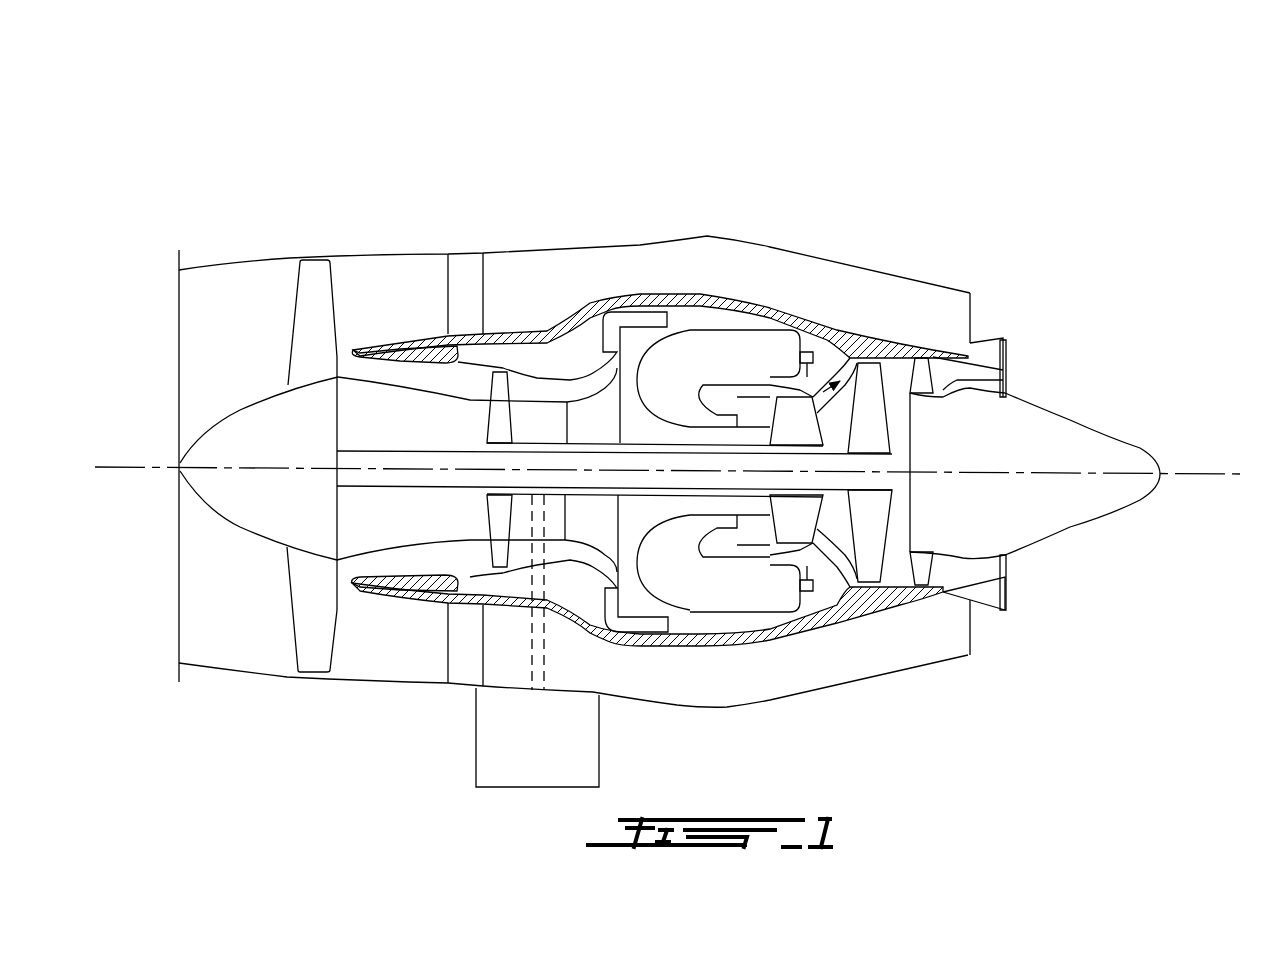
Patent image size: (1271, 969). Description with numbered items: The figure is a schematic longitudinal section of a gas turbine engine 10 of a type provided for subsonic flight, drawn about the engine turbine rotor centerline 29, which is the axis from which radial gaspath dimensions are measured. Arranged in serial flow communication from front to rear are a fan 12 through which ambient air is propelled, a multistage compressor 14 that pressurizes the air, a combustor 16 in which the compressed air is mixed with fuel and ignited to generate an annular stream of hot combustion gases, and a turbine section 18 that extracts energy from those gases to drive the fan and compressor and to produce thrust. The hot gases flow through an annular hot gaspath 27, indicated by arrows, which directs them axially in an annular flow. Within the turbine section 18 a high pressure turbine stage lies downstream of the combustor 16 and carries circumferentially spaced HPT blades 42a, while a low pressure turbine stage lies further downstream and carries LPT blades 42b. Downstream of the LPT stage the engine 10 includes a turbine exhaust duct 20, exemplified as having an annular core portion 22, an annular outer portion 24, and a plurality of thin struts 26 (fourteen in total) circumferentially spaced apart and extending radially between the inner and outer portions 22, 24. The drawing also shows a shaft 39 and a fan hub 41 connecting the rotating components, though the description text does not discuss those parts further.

The gas turbine engine 10 is at (932, 160).
The fan 12 is at (308, 600).
The multistage compressor 14 is at (552, 390).
The combustor 16 is at (717, 347).
The turbine section 18 is at (833, 530).
The turbine exhaust duct 20 is at (974, 362).
The annular core portion 22 is at (1006, 386).
The annular outer portion 24 is at (1006, 353).
The thin struts 26 is at (922, 567).
The annular hot gaspath 27 is at (820, 385).
The engine turbine rotor centerline 29 is at (1222, 473).
The shaft 39 is at (643, 495).
The fan hub 41 is at (370, 448).
The HPT blades 42a is at (795, 418).
The LPT blades 42b is at (872, 385).